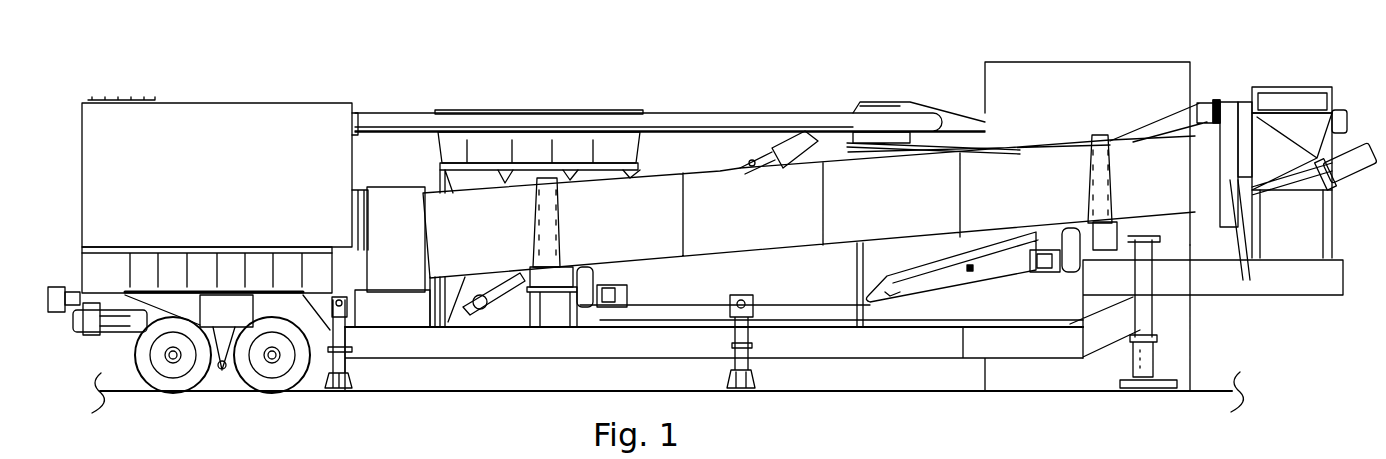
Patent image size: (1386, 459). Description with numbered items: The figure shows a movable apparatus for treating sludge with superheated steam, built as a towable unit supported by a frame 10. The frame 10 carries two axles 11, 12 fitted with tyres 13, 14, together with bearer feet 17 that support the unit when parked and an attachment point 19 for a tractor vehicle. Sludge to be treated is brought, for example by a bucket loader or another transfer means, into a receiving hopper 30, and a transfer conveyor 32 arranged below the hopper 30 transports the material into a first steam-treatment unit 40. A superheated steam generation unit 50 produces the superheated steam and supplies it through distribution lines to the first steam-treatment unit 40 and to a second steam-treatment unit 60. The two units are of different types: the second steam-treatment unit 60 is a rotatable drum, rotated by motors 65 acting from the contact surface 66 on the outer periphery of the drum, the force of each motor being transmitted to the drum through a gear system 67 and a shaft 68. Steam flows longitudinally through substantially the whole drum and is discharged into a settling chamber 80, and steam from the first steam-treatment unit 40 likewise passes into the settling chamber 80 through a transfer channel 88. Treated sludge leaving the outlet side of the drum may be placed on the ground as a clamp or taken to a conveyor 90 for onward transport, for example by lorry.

The frame 10 is at (913, 345).
The axle 11 is at (285, 360).
The axle 12 is at (178, 362).
The tyre 13 is at (255, 383).
The tyre 14 is at (151, 375).
The bearer feet 17 is at (345, 365).
The attachment point 19 is at (1343, 280).
The receiving hopper 30 is at (448, 147).
The transfer conveyor 32 is at (767, 153).
The first steam-treatment unit 40 is at (860, 153).
The superheated steam generation unit 50 is at (1180, 75).
The second steam-treatment unit 60 is at (1062, 152).
The motors 65 is at (627, 293).
The contact surface 66 is at (545, 224).
The gear system 67 is at (583, 273).
The shaft 68 is at (570, 270).
The settling chamber 80 is at (298, 115).
The transfer channel 88 is at (702, 120).
The conveyor 90 is at (412, 313).